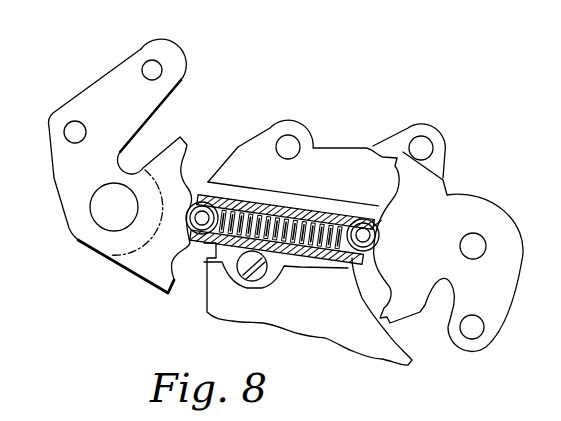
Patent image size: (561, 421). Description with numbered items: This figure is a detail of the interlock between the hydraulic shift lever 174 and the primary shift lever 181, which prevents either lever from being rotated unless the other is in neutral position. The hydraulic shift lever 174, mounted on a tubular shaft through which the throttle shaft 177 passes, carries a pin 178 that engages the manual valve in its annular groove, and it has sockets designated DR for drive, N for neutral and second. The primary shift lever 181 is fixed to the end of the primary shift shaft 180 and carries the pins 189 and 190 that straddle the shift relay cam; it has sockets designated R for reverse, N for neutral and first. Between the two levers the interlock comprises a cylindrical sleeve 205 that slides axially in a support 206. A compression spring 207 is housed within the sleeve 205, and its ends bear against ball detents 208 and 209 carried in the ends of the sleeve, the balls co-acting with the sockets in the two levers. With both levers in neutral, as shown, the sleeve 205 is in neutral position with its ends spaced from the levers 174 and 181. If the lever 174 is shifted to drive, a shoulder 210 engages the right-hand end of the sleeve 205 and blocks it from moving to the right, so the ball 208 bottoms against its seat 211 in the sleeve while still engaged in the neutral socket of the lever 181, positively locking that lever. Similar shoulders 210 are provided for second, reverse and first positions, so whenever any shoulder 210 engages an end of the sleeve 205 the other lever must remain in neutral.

The hydraulic shift lever 174 is at (443, 196).
The throttle shaft 177 is at (475, 246).
The pin 178 is at (472, 327).
The primary shift shaft 180 is at (104, 212).
The primary shift lever 181 is at (98, 97).
The pin 189 is at (152, 70).
The pin 190 is at (74, 132).
The cylindrical sleeve 205 is at (283, 206).
The support 206 is at (312, 198).
The compression spring 207 is at (302, 238).
The ball detent 208 is at (205, 223).
The ball detent 209 is at (372, 236).
The shoulder 210 is at (183, 152).
The seat 211 is at (233, 203).